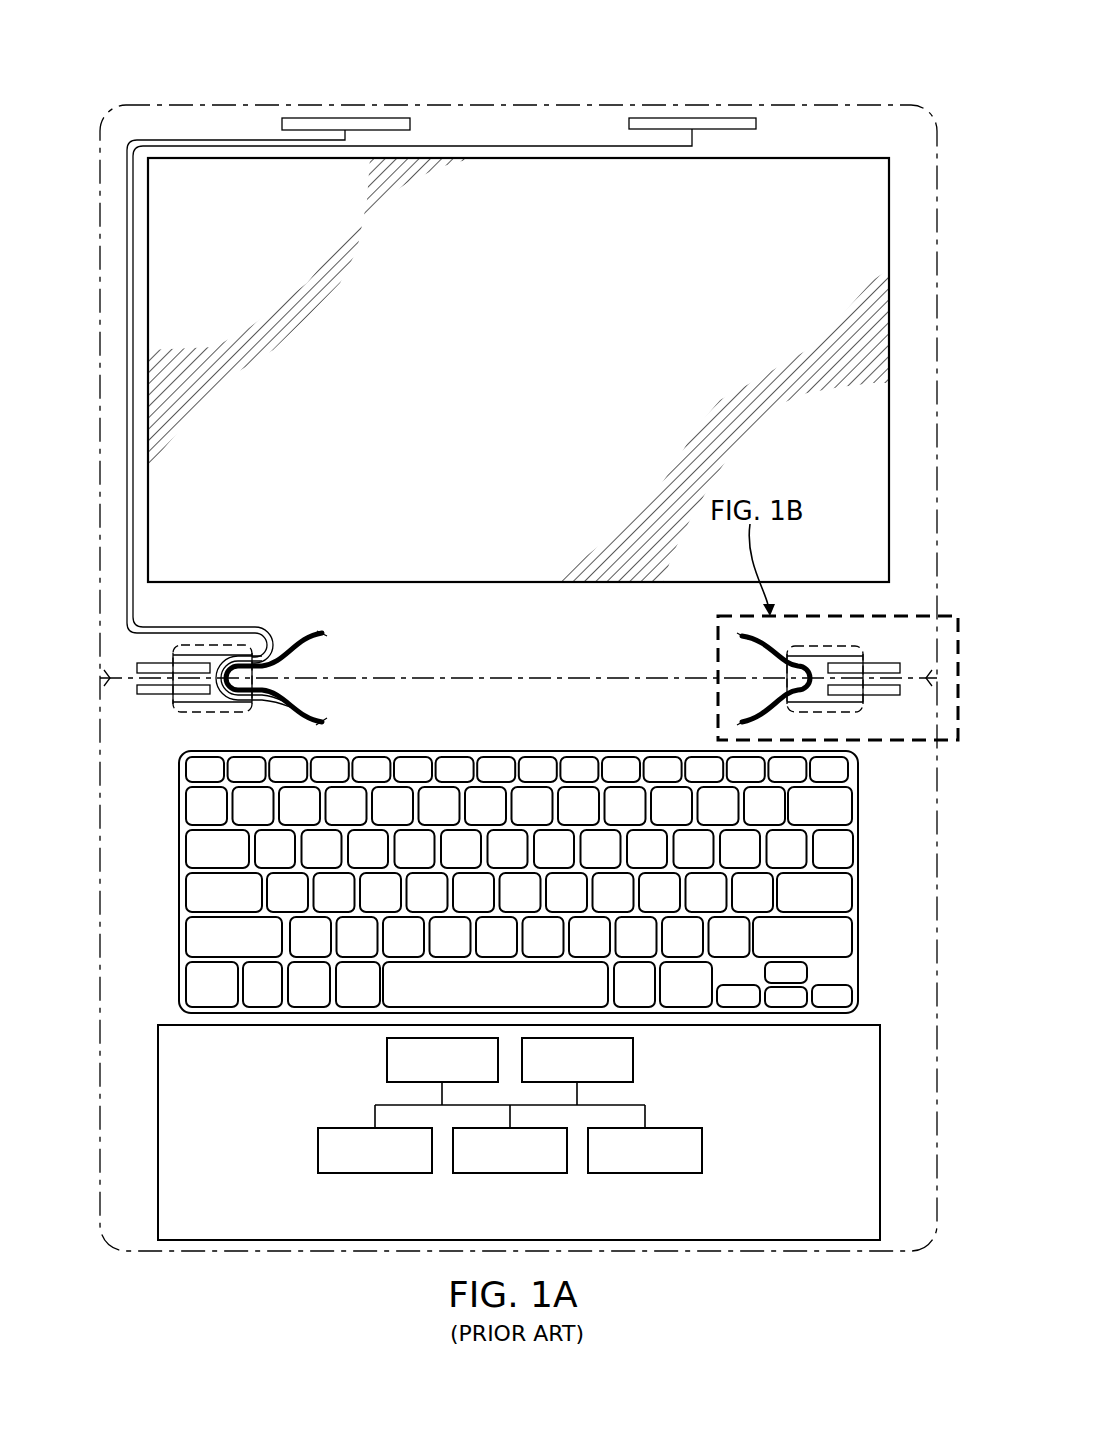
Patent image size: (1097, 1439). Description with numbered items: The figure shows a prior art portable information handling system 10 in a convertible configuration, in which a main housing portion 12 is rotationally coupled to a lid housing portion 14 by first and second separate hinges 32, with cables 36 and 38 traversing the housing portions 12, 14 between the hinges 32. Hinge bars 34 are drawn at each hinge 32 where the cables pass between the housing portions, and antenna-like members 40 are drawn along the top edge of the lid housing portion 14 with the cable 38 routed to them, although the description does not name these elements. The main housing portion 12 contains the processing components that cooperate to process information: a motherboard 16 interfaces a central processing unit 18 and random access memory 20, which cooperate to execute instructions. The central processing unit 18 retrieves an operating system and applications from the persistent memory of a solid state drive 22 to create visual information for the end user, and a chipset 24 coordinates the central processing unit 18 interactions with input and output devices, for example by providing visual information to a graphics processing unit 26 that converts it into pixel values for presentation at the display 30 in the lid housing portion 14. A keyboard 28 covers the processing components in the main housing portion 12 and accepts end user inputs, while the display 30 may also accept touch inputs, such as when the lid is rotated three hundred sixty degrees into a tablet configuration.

The portable information handling system 10 is at (808, 50).
The main housing portion 12 is at (100, 995).
The lid housing portion 14 is at (100, 353).
The motherboard 16 is at (225, 1241).
The central processing unit (CPU) 18 is at (387, 1058).
The random access memory (RAM) 20 is at (633, 1060).
The solid state drive (SSD) 22 is at (352, 1175).
The chipset 24 is at (488, 1175).
The graphics processing unit (GPU) 26 is at (665, 1175).
The keyboard 28 is at (858, 976).
The display 30 is at (531, 385).
The hinge 32 is at (215, 660).
The hinge bars 34 is at (157, 663).
The cable 36 is at (325, 640).
The cable 38 is at (133, 526).
The antennas 40 is at (316, 118).